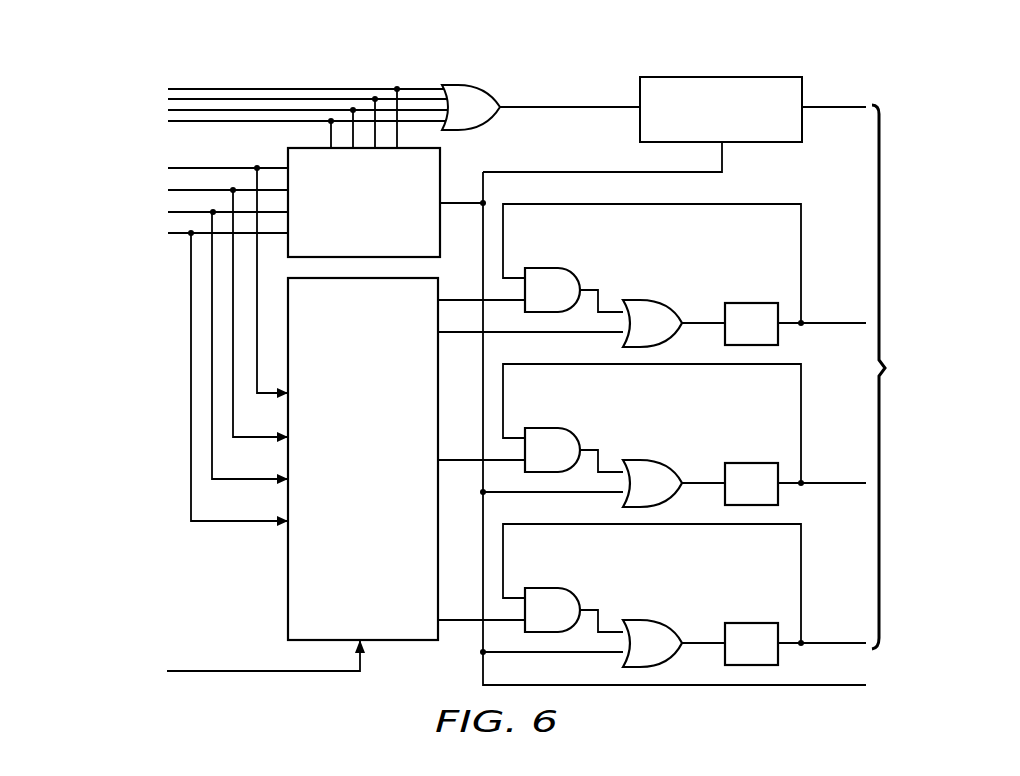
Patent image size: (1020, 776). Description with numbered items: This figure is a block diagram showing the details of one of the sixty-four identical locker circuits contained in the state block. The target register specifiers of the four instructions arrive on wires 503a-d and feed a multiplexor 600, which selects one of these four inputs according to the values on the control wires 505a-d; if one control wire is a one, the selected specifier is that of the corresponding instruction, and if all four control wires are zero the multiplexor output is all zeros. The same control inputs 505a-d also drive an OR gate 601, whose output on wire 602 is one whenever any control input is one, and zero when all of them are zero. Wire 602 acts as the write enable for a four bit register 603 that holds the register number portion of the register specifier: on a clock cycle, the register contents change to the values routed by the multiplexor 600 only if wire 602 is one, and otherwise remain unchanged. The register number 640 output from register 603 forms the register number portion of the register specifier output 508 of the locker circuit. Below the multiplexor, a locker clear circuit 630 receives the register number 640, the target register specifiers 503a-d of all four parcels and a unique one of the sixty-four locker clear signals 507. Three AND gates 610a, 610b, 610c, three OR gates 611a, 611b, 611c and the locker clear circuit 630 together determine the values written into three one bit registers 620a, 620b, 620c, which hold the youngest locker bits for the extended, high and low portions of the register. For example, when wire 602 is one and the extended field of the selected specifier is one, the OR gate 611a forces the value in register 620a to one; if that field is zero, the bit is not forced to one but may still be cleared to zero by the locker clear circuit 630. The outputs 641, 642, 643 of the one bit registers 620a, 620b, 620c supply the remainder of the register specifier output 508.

The control inputs 505a-d is at (163, 83).
The target register specifier wires 503a-d is at (163, 160).
The multiplexor 600 is at (384, 230).
The OR gate 601 is at (475, 85).
The wire 602 is at (590, 106).
The four bit register 603 is at (720, 77).
The register number 640 is at (828, 106).
The locker clear circuit 630 is at (383, 469).
The locker clear signal 507 is at (232, 672).
The AND gate 610a is at (553, 268).
The AND gate 610b is at (553, 428).
The AND gate 610c is at (553, 588).
The OR gate 611a is at (677, 283).
The OR gate 611b is at (677, 443).
The OR gate 611c is at (677, 603).
The one bit register 620a is at (752, 303).
The one bit register 620b is at (752, 463).
The one bit register 620c is at (752, 623).
The output 641 is at (828, 322).
The output 642 is at (828, 482).
The output 643 is at (828, 642).
The register specifier output 508 is at (899, 377).